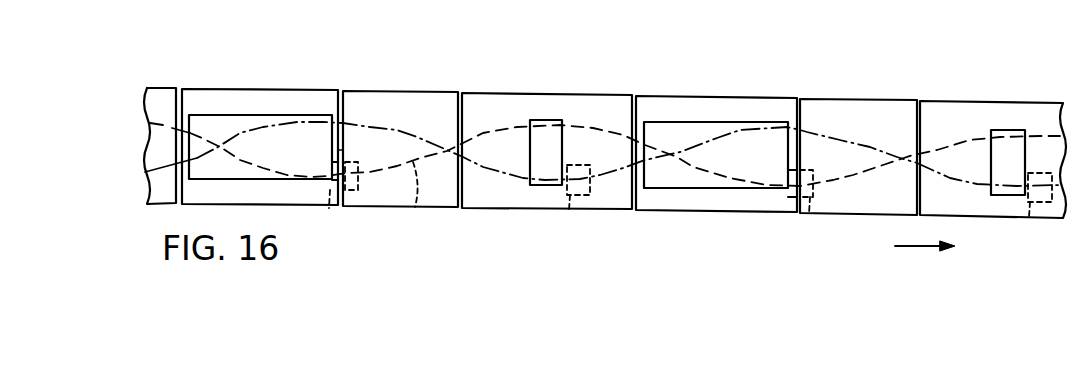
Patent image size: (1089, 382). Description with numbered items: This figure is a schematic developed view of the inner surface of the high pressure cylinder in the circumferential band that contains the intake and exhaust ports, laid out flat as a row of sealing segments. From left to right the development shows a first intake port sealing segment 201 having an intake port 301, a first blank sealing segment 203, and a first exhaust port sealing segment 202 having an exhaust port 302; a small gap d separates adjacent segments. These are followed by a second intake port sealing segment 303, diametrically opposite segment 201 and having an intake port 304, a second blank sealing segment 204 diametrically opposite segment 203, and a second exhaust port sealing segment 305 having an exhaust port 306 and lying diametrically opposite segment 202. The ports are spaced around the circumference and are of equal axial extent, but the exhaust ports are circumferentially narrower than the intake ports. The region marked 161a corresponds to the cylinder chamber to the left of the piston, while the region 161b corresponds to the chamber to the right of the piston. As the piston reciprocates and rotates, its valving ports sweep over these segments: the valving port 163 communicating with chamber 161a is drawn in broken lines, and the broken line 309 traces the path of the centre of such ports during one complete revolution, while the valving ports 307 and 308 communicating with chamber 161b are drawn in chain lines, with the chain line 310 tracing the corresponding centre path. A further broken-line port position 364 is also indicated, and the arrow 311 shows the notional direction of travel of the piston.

The first intake port sealing segment 201 is at (214, 98).
The intake port 301 is at (254, 117).
The gap distance between sections d is at (357, 80).
The first blank sealing segment 203 is at (388, 93).
The first exhaust port sealing segment 202 is at (602, 103).
The exhaust port 302 is at (543, 126).
The second intake port sealing segment 303 is at (692, 103).
The intake port 304 is at (725, 127).
The second blank sealing segment 204 is at (837, 105).
The second exhaust port sealing segment 305 is at (1033, 112).
The exhaust port 306 is at (999, 133).
The valving port 163 is at (327, 212).
The valving port 308 is at (565, 213).
The sensing element position 364 is at (803, 222).
The valving port 307 is at (1028, 209).
The broken line 309 is at (410, 213).
The chamber region 161a is at (523, 80).
The chamber region 161b is at (530, 247).
The chain line 310 is at (873, 142).
The arrow 311 is at (925, 259).